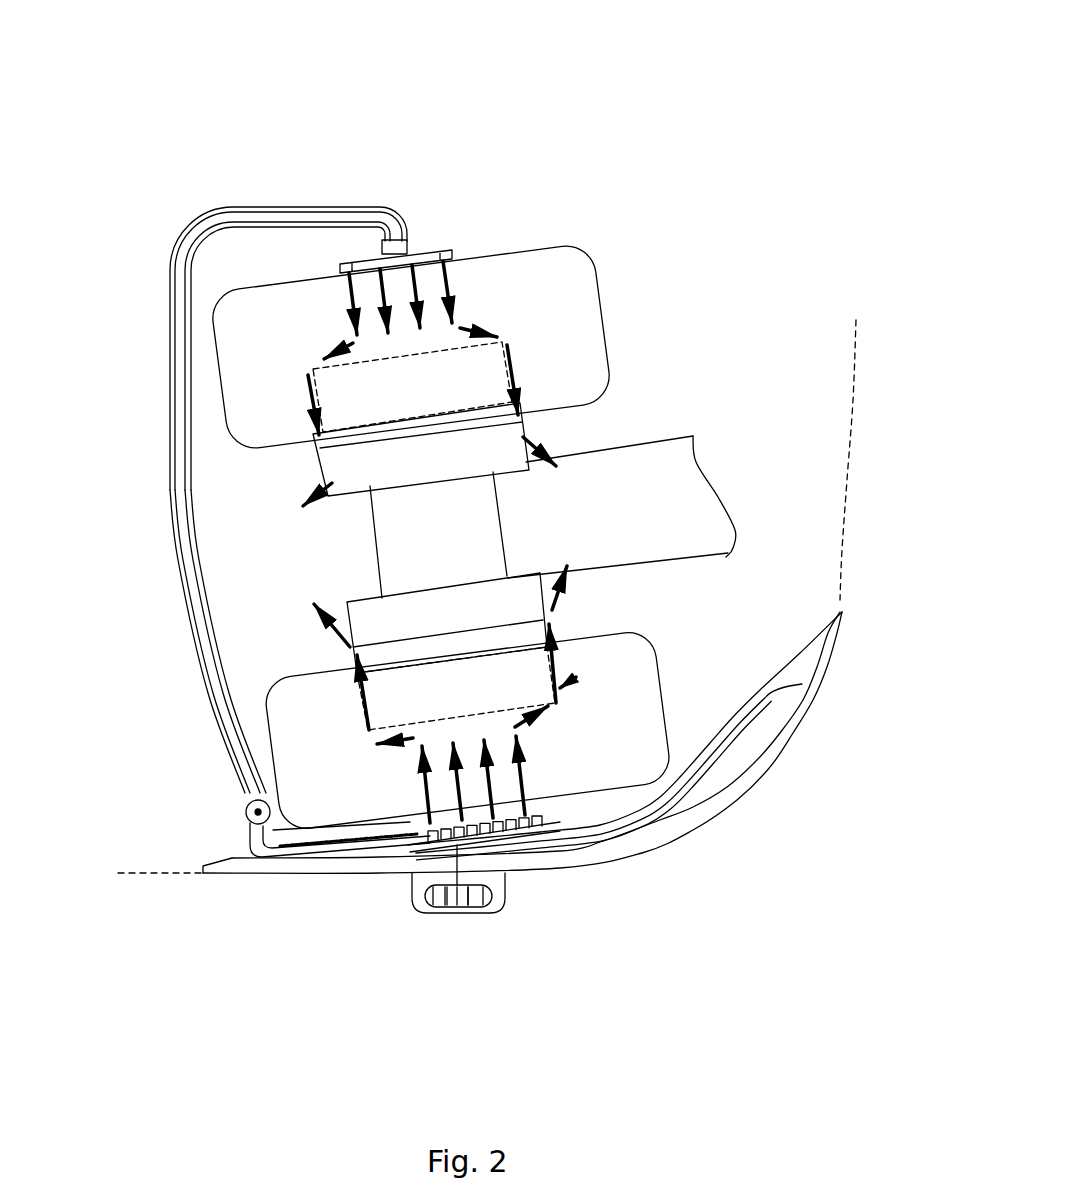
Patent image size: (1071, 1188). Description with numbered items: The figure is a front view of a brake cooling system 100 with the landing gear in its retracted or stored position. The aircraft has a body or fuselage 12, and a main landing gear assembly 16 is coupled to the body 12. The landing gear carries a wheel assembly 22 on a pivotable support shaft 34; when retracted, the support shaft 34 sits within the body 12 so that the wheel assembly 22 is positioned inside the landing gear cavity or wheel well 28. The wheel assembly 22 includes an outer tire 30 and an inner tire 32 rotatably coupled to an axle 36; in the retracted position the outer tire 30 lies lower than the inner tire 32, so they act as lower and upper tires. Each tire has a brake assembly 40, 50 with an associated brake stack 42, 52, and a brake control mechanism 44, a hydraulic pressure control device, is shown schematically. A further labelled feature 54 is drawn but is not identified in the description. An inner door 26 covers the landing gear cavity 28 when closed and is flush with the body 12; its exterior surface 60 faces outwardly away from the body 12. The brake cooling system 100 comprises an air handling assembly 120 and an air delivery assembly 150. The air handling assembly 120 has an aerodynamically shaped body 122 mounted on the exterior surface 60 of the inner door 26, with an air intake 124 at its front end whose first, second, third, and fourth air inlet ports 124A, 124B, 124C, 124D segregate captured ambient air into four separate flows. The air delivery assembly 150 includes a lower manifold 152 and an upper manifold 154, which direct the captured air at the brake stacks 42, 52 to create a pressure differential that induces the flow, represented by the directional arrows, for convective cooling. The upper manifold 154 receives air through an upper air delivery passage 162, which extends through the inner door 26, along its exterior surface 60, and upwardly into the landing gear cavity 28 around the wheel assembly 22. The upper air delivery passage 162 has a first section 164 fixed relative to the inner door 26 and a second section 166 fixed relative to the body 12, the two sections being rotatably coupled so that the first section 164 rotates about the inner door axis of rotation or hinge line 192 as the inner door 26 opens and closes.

The body 12 is at (190, 873).
The main landing gear assembly 16 is at (680, 157).
The wheel assembly 22 is at (628, 318).
The inner door 26 is at (688, 824).
The landing gear cavity 28 is at (252, 483).
The outer tire 30 is at (653, 696).
The inner tire 32 is at (603, 365).
The support shaft 34 is at (693, 436).
The axle 36 is at (495, 517).
The brake assembly 40 is at (646, 650).
The brake stack 42 is at (545, 665).
The brake control mechanism 44 is at (357, 605).
The brake assembly 50 is at (513, 363).
The brake stack 52 is at (495, 383).
The air flow 54 is at (333, 493).
The exterior surface 60 is at (643, 853).
The brake cooling system 100 is at (142, 343).
The air handling assembly 120 is at (412, 893).
The body 122 is at (508, 883).
The air intake 124 is at (490, 897).
The first air inlet port 124A is at (485, 906).
The second air inlet port 124B is at (470, 906).
The third air inlet port 124C is at (448, 906).
The fourth air inlet port 124D is at (433, 906).
The air delivery assembly 150 is at (215, 837).
The lower manifold 152 is at (545, 826).
The upper manifold 154 is at (422, 252).
The upper air delivery passage 162 is at (207, 692).
The first section 164 is at (282, 853).
The second section 166 is at (170, 478).
The inner door axis of rotation 192 is at (255, 812).